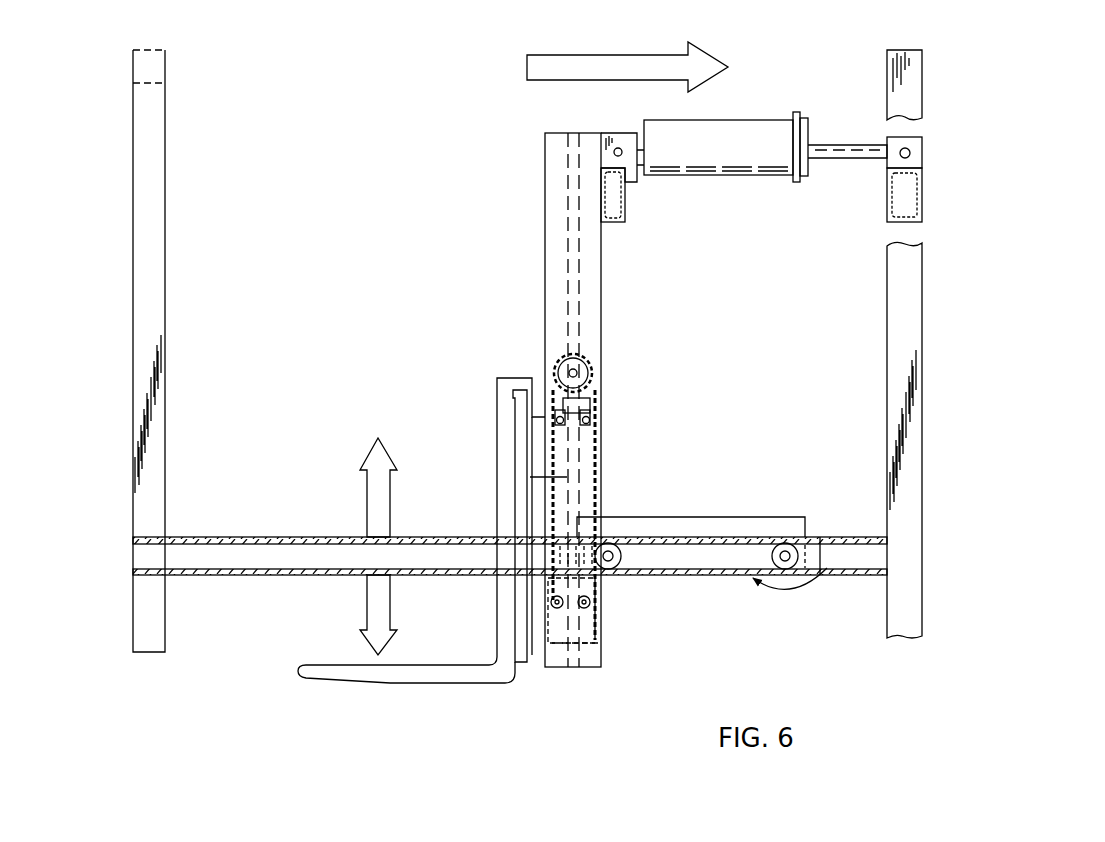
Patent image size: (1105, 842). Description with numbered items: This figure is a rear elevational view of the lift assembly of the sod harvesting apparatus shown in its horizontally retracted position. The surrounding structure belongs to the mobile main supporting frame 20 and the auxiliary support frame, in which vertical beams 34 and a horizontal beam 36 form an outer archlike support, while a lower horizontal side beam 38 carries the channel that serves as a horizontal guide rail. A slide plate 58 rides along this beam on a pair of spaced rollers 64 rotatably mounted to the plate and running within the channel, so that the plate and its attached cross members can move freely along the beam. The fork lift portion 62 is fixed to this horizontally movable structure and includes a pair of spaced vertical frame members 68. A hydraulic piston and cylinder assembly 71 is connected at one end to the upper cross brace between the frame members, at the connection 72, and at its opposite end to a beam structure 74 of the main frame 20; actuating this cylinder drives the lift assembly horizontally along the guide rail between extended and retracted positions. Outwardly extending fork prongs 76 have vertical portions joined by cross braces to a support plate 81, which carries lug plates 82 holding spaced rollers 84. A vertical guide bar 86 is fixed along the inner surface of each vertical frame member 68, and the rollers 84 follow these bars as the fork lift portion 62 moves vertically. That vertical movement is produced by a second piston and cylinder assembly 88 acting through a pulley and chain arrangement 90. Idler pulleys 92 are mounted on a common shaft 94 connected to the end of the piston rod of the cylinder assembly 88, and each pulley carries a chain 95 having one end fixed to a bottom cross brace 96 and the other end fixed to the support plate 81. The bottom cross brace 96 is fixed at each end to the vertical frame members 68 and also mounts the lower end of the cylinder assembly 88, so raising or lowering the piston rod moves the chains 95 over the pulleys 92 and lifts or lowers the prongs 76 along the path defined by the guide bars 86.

The main supporting frame 20 is at (937, 305).
The vertical beams 34 is at (134, 315).
The horizontal beam 36 is at (140, 71).
The horizontal side beam 38 is at (466, 577).
The slide plate 58 is at (740, 516).
The fork lift portion 62 is at (475, 506).
The rollers 64 is at (787, 558).
The vertical frame members 68 is at (580, 400).
The hydraulic piston and cylinder assembly 71 is at (748, 122).
The connection of piston and cylinder assembly to upper cross brace 72 is at (638, 181).
The beam structure of main frame 74 is at (918, 82).
The fork prongs 76 is at (335, 660).
The support plate 81 is at (533, 501).
The lug plates 82 is at (598, 496).
The rollers 84 is at (548, 627).
The vertical guide bar 86 is at (568, 204).
The piston and cylinder assembly 88 is at (553, 388).
The pulley and chain arrangement 90 is at (550, 357).
The idler pulleys 92 is at (590, 379).
The common shaft 94 is at (577, 372).
The chain 95 is at (590, 352).
The bottom cross brace 96 is at (605, 655).